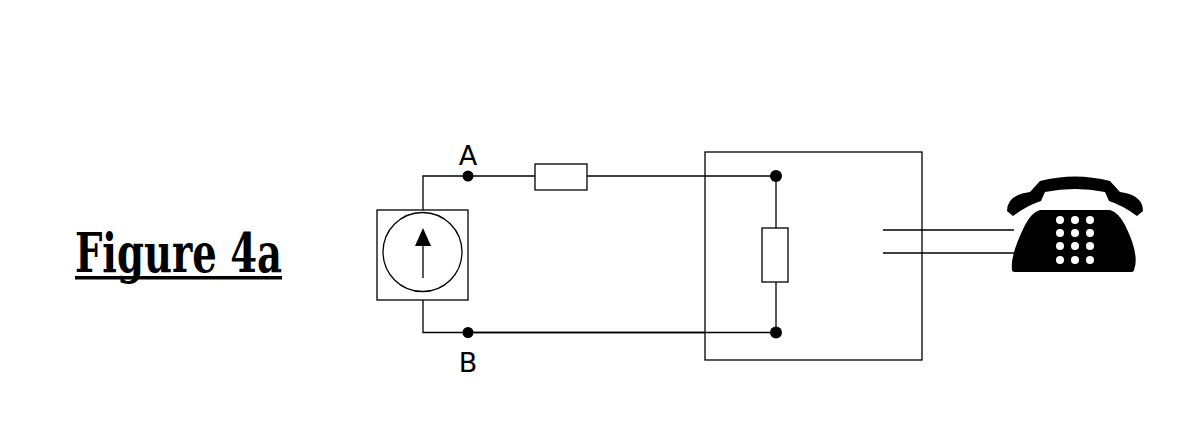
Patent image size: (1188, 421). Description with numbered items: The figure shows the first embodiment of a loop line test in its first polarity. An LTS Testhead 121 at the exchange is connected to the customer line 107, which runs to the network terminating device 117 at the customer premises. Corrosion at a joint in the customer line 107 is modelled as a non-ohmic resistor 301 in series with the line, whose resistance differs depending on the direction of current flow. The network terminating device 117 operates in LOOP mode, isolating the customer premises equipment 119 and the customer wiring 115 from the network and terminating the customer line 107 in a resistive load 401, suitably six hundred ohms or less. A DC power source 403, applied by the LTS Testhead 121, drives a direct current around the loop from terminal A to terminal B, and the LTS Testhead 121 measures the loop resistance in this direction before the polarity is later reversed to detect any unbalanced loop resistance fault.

The DC power source 403 is at (398, 223).
The LTS Testhead 121 is at (380, 253).
The non-ohmic resistor 301 is at (560, 163).
The customer line 107 is at (612, 333).
The network terminating device 117 is at (810, 360).
The resistive load 401 is at (789, 257).
The customer wiring 115 is at (970, 253).
The customer premises equipment 119 is at (1083, 175).